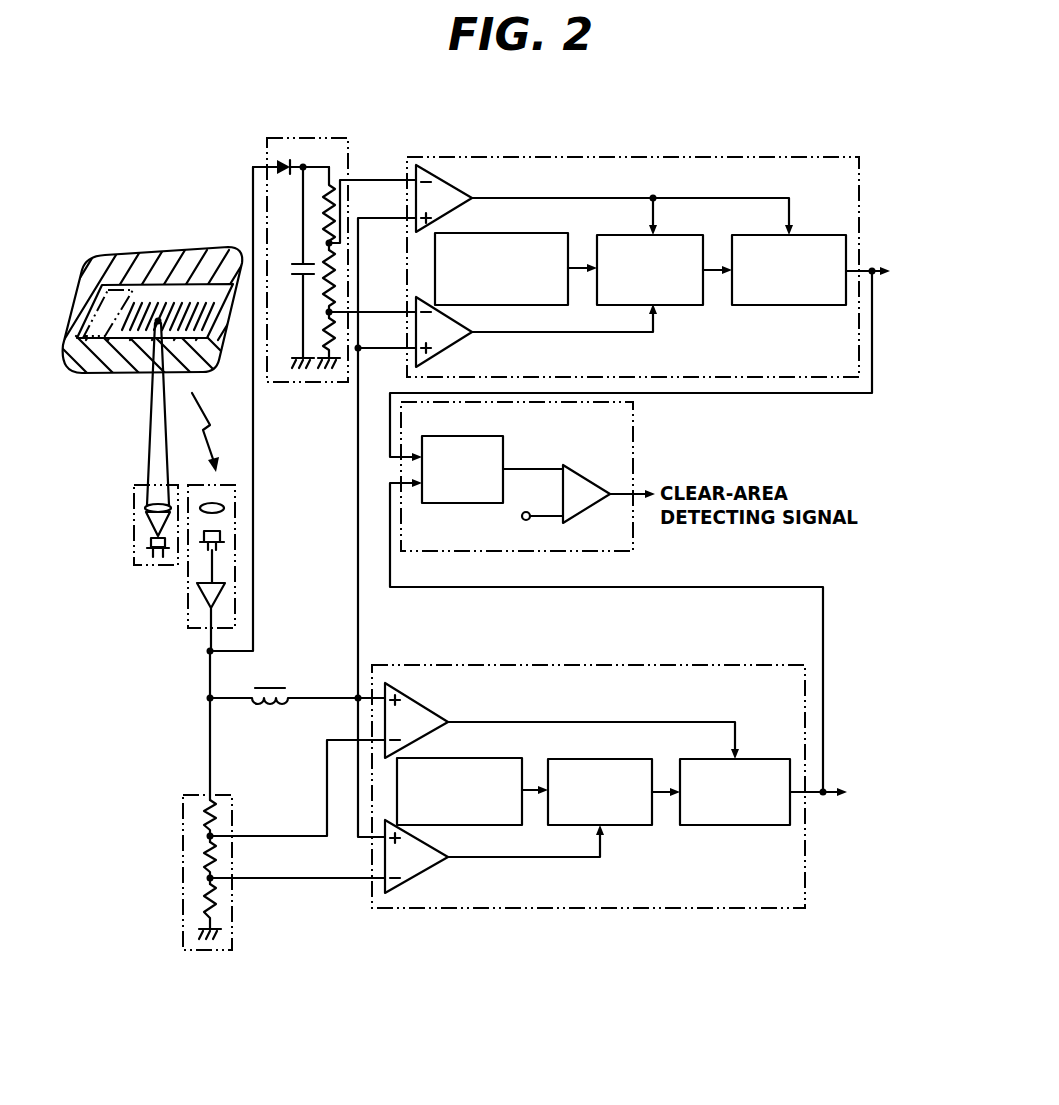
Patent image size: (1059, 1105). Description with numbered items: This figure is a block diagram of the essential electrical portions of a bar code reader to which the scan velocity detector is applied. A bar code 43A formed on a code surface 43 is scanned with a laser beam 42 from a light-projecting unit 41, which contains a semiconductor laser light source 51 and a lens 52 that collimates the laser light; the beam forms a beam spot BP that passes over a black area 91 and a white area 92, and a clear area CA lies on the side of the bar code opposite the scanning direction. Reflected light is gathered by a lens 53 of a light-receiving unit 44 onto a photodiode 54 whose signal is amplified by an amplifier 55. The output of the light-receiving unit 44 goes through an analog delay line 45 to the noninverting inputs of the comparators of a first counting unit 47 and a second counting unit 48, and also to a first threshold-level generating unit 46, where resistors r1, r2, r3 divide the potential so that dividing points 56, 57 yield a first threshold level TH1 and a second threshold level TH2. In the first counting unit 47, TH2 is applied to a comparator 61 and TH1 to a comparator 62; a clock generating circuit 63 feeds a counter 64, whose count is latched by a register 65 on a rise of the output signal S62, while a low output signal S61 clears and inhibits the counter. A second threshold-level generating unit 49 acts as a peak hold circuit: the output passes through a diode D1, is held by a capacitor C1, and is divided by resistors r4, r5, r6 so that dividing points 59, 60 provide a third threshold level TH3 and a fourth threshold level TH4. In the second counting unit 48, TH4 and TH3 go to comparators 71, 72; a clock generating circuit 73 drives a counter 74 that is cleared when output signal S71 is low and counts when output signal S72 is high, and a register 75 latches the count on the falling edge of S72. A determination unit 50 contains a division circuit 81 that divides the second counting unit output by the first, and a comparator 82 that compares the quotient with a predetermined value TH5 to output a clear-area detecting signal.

The light-projecting unit 41 is at (138, 566).
The laser beam 42 is at (158, 427).
The code surface 43 is at (190, 252).
The bar code 43A is at (146, 290).
The light-receiving unit 44 is at (188, 600).
The analog delay line 45 is at (290, 693).
The first threshold-level generating unit 46 is at (180, 840).
The first counting unit 47 is at (609, 820).
The second counting unit 48 is at (648, 242).
The second threshold-level generating unit 49 is at (323, 231).
The determination unit 50 is at (552, 476).
The semiconductor laser light source 51 is at (148, 545).
The lens 52 is at (148, 508).
The lens 53 is at (223, 505).
The photodiode 54 is at (223, 540).
The amplifier 55 is at (226, 595).
The potential-dividing point 56 is at (208, 836).
The potential-dividing point 57 is at (208, 878).
The potential-dividing point 59 is at (333, 245).
The potential-dividing point 60 is at (333, 314).
The comparator 61 is at (422, 879).
The comparator 62 is at (418, 700).
The clock generating circuit 63 is at (468, 757).
The counter 64 is at (596, 759).
The register 65 is at (770, 826).
The comparator 71 is at (456, 346).
The comparator 72 is at (460, 183).
The clock generating circuit 73 is at (518, 233).
The counter 74 is at (657, 238).
The register 75 is at (815, 306).
The division circuit 81 is at (504, 447).
The comparator 82 is at (572, 485).
The black area 91 is at (97, 268).
The white area 92 is at (110, 300).
The clear area CA is at (86, 343).
The beam spot BP is at (140, 342).
The diode D1 is at (282, 162).
The capacitor C1 is at (298, 279).
The resistor r1 is at (200, 812).
The resistor r2 is at (200, 858).
The resistor r3 is at (200, 912).
The resistor r4 is at (326, 210).
The resistor r5 is at (333, 276).
The resistor r6 is at (326, 331).
The first threshold level TH1 is at (297, 788).
The second threshold level TH2 is at (297, 863).
The third threshold level TH3 is at (372, 202).
The fourth threshold level TH4 is at (372, 302).
The predetermined value TH5 is at (519, 516).
The output signal S61 is at (527, 855).
The output signal S62 is at (593, 727).
The output signal S71 is at (564, 335).
The output signal S72 is at (632, 202).